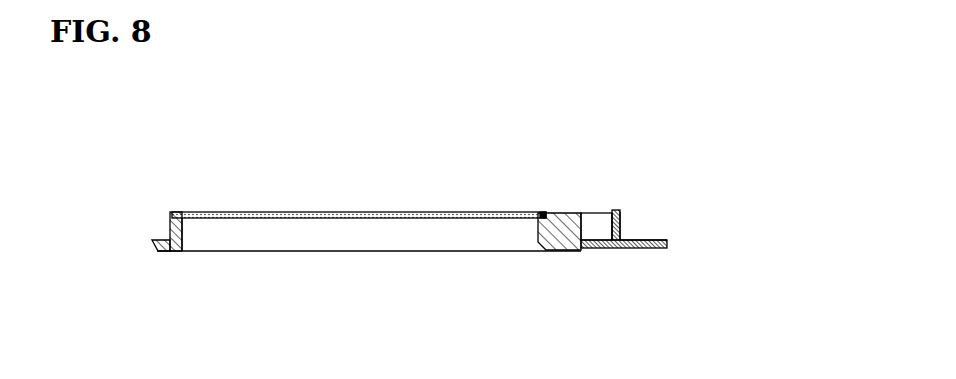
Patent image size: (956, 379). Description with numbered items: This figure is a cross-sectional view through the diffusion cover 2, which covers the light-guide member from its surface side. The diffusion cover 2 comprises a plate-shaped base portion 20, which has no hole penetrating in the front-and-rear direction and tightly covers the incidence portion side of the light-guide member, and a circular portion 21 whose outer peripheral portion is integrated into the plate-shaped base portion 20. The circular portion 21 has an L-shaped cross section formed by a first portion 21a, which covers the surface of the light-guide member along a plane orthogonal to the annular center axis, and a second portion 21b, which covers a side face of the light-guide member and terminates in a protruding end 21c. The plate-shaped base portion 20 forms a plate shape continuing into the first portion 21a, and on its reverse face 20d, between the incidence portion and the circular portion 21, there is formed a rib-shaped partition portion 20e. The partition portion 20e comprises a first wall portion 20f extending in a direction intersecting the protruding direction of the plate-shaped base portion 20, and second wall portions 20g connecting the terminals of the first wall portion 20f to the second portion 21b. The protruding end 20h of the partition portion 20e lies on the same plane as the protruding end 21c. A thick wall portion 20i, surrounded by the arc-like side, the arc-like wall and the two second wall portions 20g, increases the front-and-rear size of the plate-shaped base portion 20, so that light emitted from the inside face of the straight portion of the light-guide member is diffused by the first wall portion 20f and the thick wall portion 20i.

The diffusion cover 2 is at (407, 152).
The plate-shaped base portion 20 is at (657, 240).
The reverse face 20d is at (638, 240).
The partition portion 20e is at (622, 237).
The first wall portion 20f is at (622, 237).
The second wall portion 20g is at (597, 211).
The protruding end 20h is at (615, 210).
The thick wall portion 20i is at (553, 252).
The circular portion 21 is at (265, 212).
The first portion 21a is at (157, 240).
The second portion 21b is at (210, 211).
The protruding end 21c is at (343, 212).